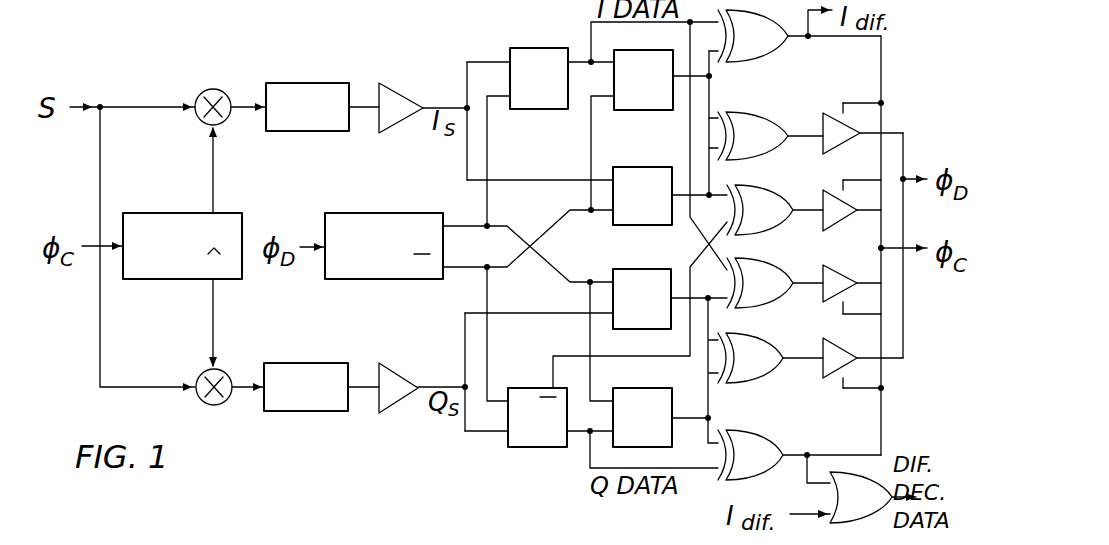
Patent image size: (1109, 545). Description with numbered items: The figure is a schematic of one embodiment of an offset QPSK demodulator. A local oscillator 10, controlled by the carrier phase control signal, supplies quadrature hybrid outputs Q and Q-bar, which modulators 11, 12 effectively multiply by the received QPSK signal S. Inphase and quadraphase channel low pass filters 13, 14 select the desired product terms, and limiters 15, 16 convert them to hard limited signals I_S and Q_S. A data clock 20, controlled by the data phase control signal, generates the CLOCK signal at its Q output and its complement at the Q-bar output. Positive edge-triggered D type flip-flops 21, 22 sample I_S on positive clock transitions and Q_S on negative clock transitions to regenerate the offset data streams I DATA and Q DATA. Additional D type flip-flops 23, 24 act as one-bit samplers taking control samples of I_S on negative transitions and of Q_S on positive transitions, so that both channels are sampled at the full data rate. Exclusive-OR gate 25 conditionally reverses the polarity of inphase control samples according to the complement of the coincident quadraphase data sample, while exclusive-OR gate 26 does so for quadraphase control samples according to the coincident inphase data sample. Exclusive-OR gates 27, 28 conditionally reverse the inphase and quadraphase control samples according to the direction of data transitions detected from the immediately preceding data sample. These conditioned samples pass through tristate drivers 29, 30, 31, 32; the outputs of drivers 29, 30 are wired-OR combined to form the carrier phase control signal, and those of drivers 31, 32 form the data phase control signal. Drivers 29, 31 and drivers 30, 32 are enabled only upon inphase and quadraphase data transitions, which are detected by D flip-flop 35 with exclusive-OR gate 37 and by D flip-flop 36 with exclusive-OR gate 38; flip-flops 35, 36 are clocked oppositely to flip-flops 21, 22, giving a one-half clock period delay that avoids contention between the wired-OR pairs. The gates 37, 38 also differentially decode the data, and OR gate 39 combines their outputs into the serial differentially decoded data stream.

The local oscillator 10 is at (173, 280).
The modulator 11 is at (218, 90).
The modulator 12 is at (217, 370).
The inphase channel low pass filter 13 is at (303, 86).
The quadraphase channel low pass filter 14 is at (287, 365).
The limiter 15 is at (402, 93).
The limiter 16 is at (402, 372).
The data clock 20 is at (390, 280).
The D type flip-flop 21 is at (520, 48).
The D type flip-flop 22 is at (515, 392).
The D type flip-flop 23 is at (622, 167).
The D type flip-flop 24 is at (622, 269).
The exclusive-OR gate 25 is at (764, 188).
The exclusive-OR gate 26 is at (770, 264).
The exclusive-OR gate 27 is at (762, 112).
The exclusive-OR gate 28 is at (761, 340).
The tristate driver 29 is at (831, 230).
The tristate driver 30 is at (831, 266).
The tristate driver 31 is at (834, 146).
The tristate driver 32 is at (828, 349).
The D flip-flop 35 is at (628, 110).
The D flip-flop 36 is at (623, 388).
The exclusive-OR gate 37 is at (770, 56).
The exclusive-OR gate 38 is at (756, 440).
The OR gate 39 is at (832, 472).